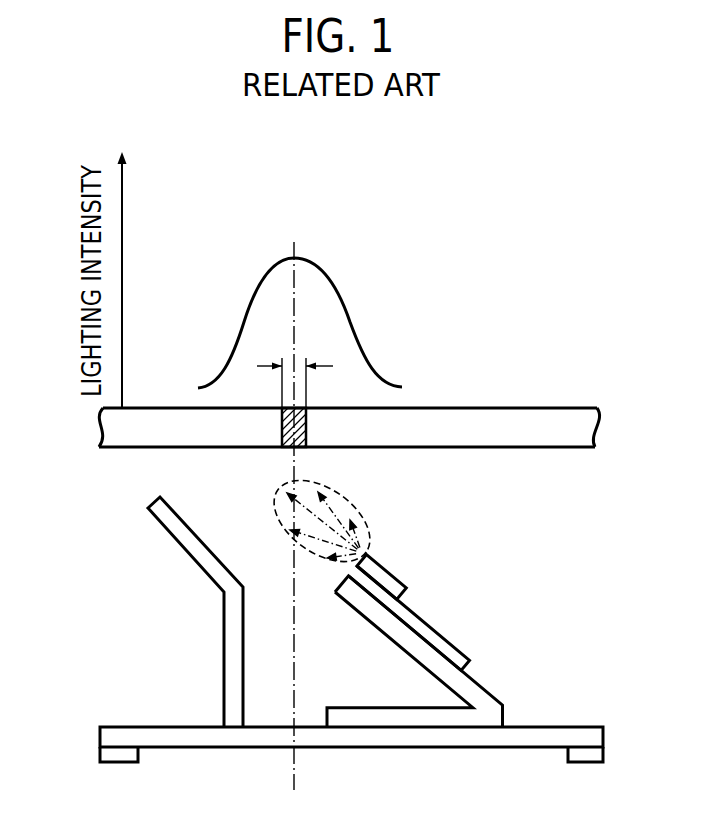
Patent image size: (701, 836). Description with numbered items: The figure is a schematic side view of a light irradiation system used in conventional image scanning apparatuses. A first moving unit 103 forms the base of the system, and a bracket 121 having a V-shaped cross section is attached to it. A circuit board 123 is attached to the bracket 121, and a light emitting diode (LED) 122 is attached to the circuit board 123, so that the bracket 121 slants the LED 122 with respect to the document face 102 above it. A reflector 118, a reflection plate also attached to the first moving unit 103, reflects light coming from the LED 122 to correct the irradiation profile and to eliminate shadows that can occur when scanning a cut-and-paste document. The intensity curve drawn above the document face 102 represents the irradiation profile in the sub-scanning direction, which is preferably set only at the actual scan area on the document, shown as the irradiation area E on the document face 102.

The document face 102 is at (505, 408).
The first moving unit 103 is at (565, 728).
The reflector 118 is at (181, 545).
The bracket 121 is at (490, 694).
The light emitting diode (LED) 122 is at (385, 571).
The circuit board 123 is at (440, 636).
The irradiation area E is at (298, 363).